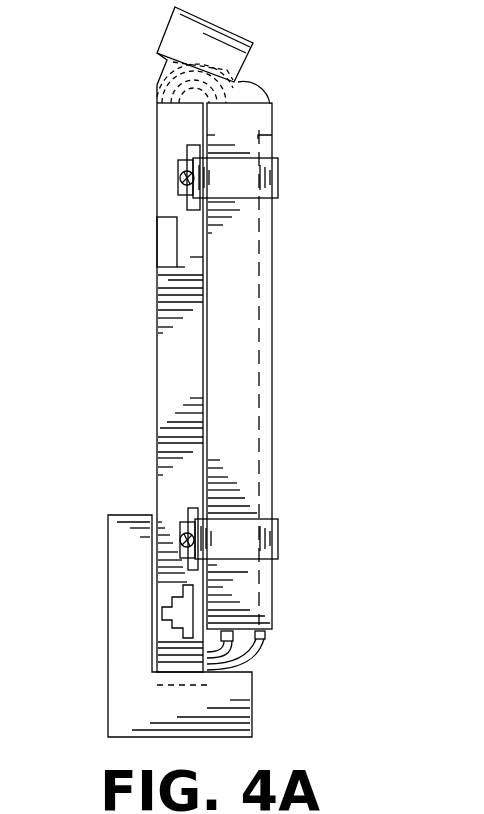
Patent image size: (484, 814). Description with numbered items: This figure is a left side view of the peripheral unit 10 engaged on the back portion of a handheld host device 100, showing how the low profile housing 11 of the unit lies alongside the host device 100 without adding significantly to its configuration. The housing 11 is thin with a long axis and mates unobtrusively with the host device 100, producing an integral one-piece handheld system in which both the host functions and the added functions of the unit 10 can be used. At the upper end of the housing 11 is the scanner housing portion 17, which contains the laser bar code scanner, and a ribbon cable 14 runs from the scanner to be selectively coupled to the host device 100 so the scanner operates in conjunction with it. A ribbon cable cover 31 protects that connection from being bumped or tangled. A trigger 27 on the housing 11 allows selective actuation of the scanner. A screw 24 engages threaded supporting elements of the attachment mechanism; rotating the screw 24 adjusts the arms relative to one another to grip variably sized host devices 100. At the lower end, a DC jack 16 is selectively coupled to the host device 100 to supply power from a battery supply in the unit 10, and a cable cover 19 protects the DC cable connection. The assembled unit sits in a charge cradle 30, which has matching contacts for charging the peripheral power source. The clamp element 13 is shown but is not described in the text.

The peripheral unit 10 is at (173, 394).
The housing 11 is at (170, 357).
The clamp 13 is at (263, 180).
The ribbon cable 14 is at (190, 109).
The DC jack 16 is at (262, 637).
The scanner housing portion 17 is at (170, 36).
The cable cover 19 is at (240, 655).
The screw 24 is at (183, 157).
The trigger 27 is at (163, 240).
The charge cradle 30 is at (260, 702).
The ribbon cable cover 31 is at (257, 78).
The handheld host device 100 is at (280, 337).